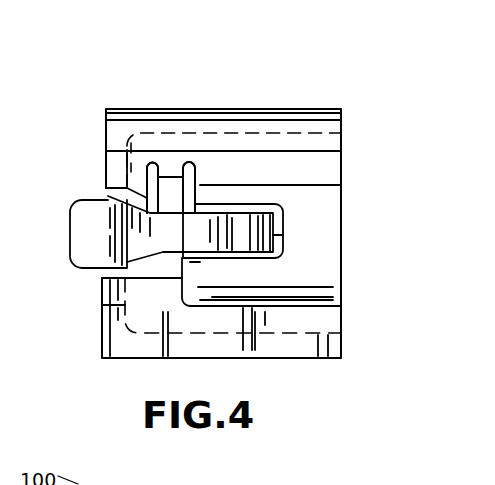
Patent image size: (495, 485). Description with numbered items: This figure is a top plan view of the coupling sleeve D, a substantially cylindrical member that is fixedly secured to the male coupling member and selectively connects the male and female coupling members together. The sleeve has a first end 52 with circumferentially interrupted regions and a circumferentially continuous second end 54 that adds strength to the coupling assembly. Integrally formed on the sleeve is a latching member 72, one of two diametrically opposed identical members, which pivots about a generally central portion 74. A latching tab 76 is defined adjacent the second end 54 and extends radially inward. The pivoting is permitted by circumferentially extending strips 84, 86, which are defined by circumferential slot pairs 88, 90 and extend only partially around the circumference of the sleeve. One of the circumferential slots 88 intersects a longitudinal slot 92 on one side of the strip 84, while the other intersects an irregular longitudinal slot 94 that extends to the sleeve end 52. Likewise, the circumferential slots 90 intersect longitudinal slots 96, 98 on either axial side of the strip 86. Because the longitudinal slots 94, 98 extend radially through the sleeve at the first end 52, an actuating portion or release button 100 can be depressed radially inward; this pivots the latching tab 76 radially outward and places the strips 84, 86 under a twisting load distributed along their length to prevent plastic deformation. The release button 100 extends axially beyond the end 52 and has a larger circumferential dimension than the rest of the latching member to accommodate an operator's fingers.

The coupling sleeve D is at (349, 127).
The first end 52 is at (105, 127).
The second end 54 is at (337, 321).
The latching member 72 is at (286, 242).
The central portion 74 is at (185, 273).
The latching tab 76 is at (281, 216).
The circumferential strip 84 is at (175, 177).
The circumferential strip 86 is at (178, 266).
The circumferential slot 88 is at (185, 196).
The circumferential slot 90 is at (192, 281).
The longitudinal slot 92 is at (255, 208).
The irregular longitudinal slot 94 is at (125, 197).
The longitudinal slot 96 is at (190, 262).
The longitudinal slot 98 is at (88, 271).
The release button 100 is at (82, 223).